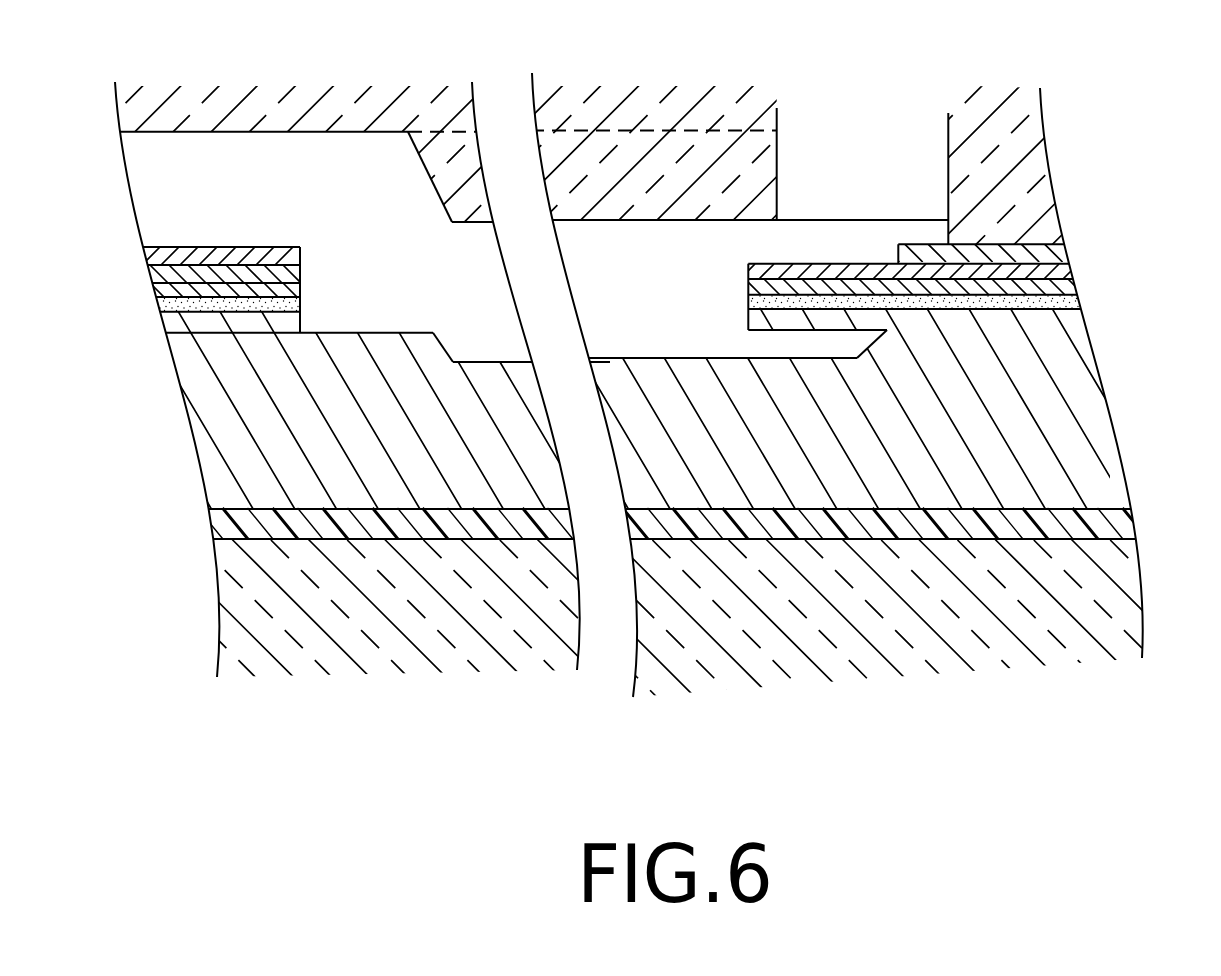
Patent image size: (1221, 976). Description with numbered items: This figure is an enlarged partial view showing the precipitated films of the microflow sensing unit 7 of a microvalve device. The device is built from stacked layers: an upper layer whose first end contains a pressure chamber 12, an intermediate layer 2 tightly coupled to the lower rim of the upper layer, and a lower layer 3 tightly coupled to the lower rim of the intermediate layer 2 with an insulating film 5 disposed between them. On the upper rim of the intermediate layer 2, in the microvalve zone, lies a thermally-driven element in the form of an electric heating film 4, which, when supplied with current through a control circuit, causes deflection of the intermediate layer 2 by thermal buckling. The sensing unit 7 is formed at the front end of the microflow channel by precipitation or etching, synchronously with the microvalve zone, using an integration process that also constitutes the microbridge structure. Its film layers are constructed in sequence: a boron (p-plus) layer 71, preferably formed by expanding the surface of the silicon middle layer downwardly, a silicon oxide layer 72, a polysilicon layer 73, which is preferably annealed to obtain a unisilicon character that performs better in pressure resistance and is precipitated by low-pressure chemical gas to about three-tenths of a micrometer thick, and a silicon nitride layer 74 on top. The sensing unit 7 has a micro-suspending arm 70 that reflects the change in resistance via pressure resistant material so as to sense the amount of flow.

The pressure chamber 12 is at (298, 155).
The electric heating film 4 is at (284, 240).
The intermediate layer 2 is at (1072, 413).
The insulating film 5 is at (1082, 523).
The lower layer 3 is at (1097, 603).
The microflow sensing unit 7 is at (847, 289).
The micro-suspending arm 70 is at (847, 284).
The boron (p+) layer 71 is at (880, 323).
The silicon oxide layer 72 is at (777, 290).
The polysilicon layer 73 is at (783, 268).
The silicon nitride layer 74 is at (930, 257).